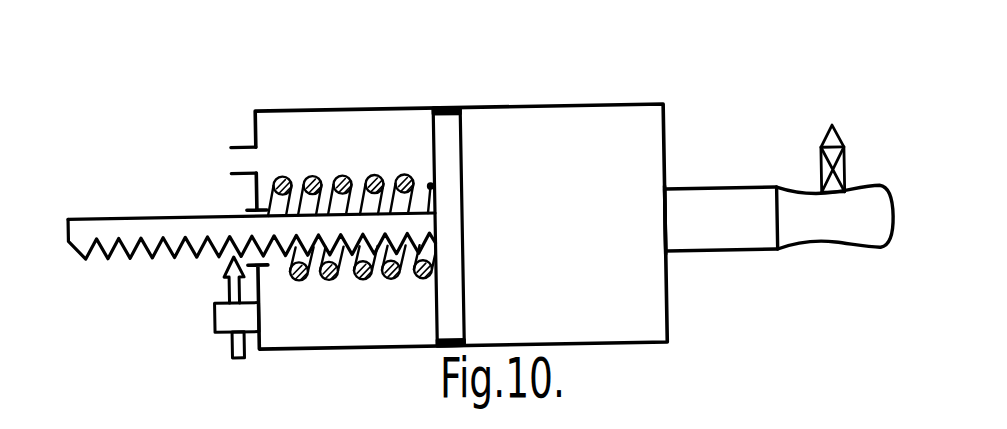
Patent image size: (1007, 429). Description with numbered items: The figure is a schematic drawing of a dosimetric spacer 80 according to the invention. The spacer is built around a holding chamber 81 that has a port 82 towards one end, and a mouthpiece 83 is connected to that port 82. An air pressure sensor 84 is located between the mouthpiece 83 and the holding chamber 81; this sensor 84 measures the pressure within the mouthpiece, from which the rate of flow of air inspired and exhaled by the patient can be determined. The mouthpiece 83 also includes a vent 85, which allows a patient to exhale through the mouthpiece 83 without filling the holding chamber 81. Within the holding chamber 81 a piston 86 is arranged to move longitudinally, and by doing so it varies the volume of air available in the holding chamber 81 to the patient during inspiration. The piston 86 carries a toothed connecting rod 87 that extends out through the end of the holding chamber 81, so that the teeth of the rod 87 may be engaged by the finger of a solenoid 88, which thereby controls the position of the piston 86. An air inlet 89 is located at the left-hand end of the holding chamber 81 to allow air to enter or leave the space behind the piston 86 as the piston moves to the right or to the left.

The dosimetric spacer 80 is at (735, 83).
The holding chamber 81 is at (402, 108).
The port 82 is at (667, 215).
The mouthpiece 83 is at (840, 246).
The air pressure sensor 84 is at (728, 228).
The vent 85 is at (847, 162).
The piston 86 is at (448, 140).
The toothed connecting rod 87 is at (148, 227).
The solenoid 88 is at (225, 310).
The air inlet 89 is at (242, 155).